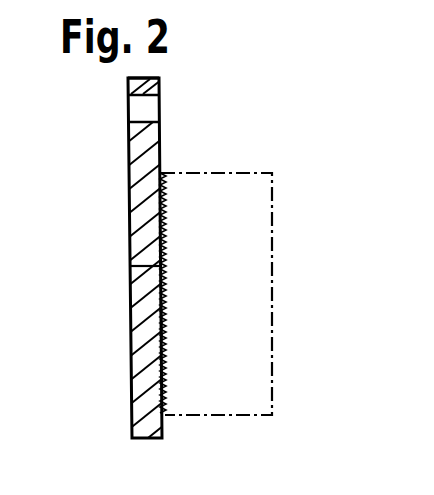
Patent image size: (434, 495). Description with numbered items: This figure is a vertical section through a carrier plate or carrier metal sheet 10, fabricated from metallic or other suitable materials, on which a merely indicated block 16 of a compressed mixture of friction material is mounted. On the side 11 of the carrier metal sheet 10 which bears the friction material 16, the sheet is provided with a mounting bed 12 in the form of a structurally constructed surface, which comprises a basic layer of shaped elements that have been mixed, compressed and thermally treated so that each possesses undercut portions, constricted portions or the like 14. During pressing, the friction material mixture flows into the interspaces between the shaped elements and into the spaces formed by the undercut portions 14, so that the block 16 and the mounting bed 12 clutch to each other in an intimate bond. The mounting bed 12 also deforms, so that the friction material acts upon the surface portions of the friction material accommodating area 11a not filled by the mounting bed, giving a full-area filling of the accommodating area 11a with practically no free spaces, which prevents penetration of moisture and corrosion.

The carrier metal sheet 10 is at (120, 218).
The side 11 is at (160, 148).
The friction material accommodating area 11a is at (163, 318).
The mounting bed 12 is at (167, 387).
The undercut portions 14 is at (160, 265).
The block of friction material 16 is at (262, 180).